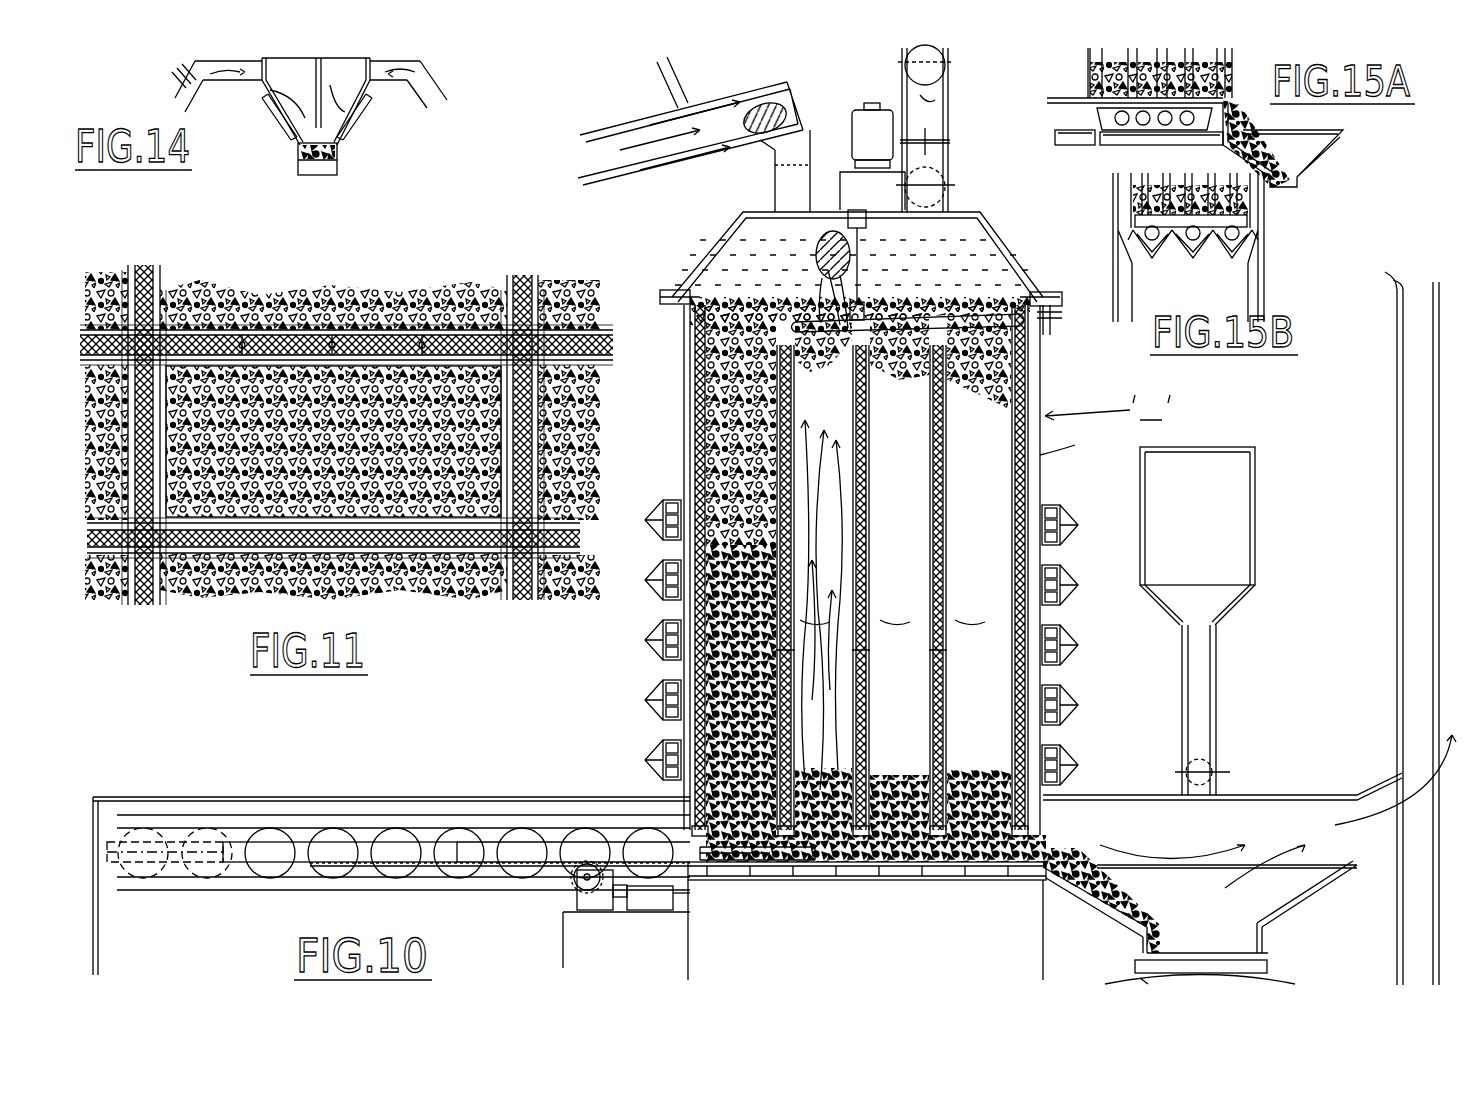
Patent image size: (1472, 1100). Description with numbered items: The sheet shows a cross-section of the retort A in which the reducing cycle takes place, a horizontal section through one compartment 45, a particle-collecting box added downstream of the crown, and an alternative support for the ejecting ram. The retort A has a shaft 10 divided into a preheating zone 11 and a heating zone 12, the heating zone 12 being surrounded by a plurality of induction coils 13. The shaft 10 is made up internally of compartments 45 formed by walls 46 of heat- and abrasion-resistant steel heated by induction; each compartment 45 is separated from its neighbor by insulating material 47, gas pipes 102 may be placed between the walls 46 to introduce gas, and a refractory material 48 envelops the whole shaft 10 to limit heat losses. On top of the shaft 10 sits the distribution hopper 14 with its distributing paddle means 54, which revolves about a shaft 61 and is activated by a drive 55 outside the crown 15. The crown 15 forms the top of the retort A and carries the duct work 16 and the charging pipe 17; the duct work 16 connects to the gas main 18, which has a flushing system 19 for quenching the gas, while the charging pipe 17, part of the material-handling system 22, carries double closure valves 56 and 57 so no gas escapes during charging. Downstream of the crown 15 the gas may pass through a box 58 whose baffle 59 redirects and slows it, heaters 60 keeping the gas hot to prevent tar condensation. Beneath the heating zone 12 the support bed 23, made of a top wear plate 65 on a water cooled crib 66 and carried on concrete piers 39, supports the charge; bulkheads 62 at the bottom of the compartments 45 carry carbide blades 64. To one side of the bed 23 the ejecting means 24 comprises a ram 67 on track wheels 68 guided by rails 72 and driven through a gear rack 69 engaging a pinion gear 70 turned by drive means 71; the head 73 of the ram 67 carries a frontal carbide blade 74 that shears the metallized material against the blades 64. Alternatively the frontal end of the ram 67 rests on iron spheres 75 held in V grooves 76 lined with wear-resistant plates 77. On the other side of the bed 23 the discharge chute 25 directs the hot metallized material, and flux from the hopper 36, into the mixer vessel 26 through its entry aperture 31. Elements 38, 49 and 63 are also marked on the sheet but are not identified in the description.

In FIG. 10, the shaft 10 is at (1110, 445).
In FIG. 10, the preheating zone 11 is at (1042, 410).
In FIG. 10, the heating zone 12 is at (1025, 540).
In FIG. 10, the induction coils 13 is at (652, 515).
In FIG. 10, the distribution hopper 14 is at (1055, 328).
In FIG. 10, the crown 15 is at (1000, 252).
In FIG. 10, the duct work 16 is at (774, 188).
In FIG. 10, the charging pipe 17 is at (950, 113).
In FIG. 14, the gas main 18 is at (190, 88).
In FIG. 10, the gas main 18 is at (752, 128).
In FIG. 14, the flushing system 19 is at (186, 70).
In FIG. 10, the flushing system 19 is at (672, 68).
In FIG. 10, the material-handling system 22 is at (935, 100).
In FIG. 10, the support bed 23 is at (852, 877).
In FIG. 10, the ejecting means 24 is at (287, 843).
In FIG. 15A, the ejecting means 24 is at (1067, 98).
In FIG. 10, the discharge chute 25 is at (1305, 902).
In FIG. 10, the vessel 26 is at (1140, 975).
In FIG. 10, the entry aperture 31 is at (1262, 962).
In FIG. 10, the hopper 36 is at (1258, 532).
In FIG. 10, the return duct 38 is at (410, 797).
In FIG. 10, the piers 39 is at (569, 963).
In FIG. 11, the compartment 45 is at (95, 304).
In FIG. 10, the compartment 45 is at (825, 589).
In FIG. 11, the walls 46 is at (128, 268).
In FIG. 10, the walls 46 is at (795, 630).
In FIG. 11, the insulating material 47 is at (144, 265).
In FIG. 10, the insulating material 47 is at (880, 651).
In FIG. 10, the refractory material 48 is at (684, 450).
In FIG. 10, the cyclone outlet tube 49 is at (1218, 693).
In FIG. 10, the distributing paddle means 54 is at (990, 322).
In FIG. 10, the drive 55 is at (845, 160).
In FIG. 10, the double closure valve 56 is at (935, 182).
In FIG. 10, the double closure valve 57 is at (945, 68).
In FIG. 14, the box 58 is at (328, 145).
In FIG. 14, the baffle 59 is at (300, 112).
In FIG. 14, the heaters 60 is at (345, 120).
In FIG. 10, the shaft 61 is at (866, 270).
In FIG. 10, the bulkheads 62 is at (960, 815).
In FIG. 10, the aggregate bed 63 is at (940, 795).
In FIG. 10, the carbide blade 64 is at (925, 800).
In FIG. 10, the top wear plate 65 is at (918, 872).
In FIG. 10, the water cooled crib 66 is at (960, 872).
In FIG. 15A, the water cooled crib 66 is at (1162, 135).
In FIG. 15B, the water cooled crib 66 is at (1135, 262).
In FIG. 10, the ram 67 is at (240, 850).
In FIG. 15A, the ram 67 is at (1050, 122).
In FIG. 15B, the ram 67 is at (1240, 222).
In FIG. 10, the track wheels 68 is at (392, 872).
In FIG. 10, the gear rack 69 is at (445, 866).
In FIG. 10, the pinion gear 70 is at (575, 882).
In FIG. 10, the drive means 71 is at (592, 900).
In FIG. 10, the rails 72 is at (360, 815).
In FIG. 10, the head 73 is at (775, 862).
In FIG. 10, the frontal carbide blade 74 is at (815, 860).
In FIG. 15A, the iron spheres 75 is at (1143, 126).
In FIG. 15B, the iron spheres 75 is at (1152, 258).
In FIG. 15B, the V grooves 76 is at (1193, 258).
In FIG. 15B, the wear-resistant plates 77 is at (1232, 258).
In FIG. 11, the gas pipes 102 is at (215, 333).
In FIG. 10, the retort A is at (1107, 407).